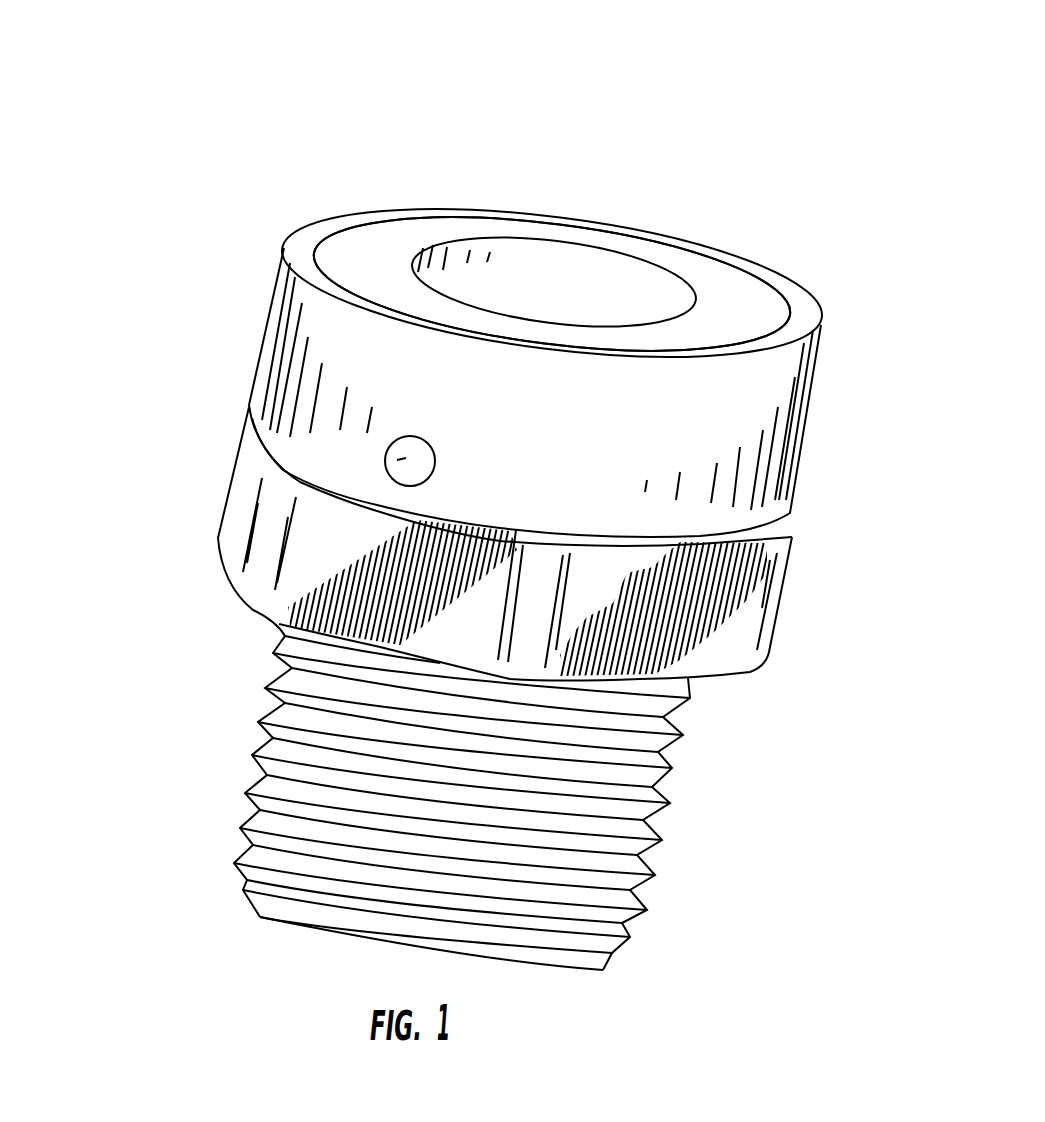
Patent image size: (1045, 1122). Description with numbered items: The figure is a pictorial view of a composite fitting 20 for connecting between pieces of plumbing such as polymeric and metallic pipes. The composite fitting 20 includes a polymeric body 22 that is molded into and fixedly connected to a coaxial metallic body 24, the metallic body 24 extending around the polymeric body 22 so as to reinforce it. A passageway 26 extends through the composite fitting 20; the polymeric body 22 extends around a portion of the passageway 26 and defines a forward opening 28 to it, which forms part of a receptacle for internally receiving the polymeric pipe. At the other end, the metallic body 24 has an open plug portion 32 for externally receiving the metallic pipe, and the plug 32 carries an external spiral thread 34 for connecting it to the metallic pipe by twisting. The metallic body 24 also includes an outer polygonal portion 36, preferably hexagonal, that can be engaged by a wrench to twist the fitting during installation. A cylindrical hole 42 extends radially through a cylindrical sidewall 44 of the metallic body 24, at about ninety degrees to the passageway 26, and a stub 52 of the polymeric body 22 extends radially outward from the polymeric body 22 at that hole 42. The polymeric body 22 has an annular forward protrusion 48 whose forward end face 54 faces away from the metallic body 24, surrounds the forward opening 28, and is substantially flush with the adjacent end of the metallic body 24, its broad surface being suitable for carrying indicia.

The composite fitting 20 is at (94, 150).
The polymeric body 22 is at (738, 317).
The metallic body 24 is at (795, 447).
The passageway 26 is at (551, 288).
The forward opening 28 is at (610, 262).
The open plug portion 32 is at (236, 837).
The external spiral thread 34 is at (667, 767).
The outer polygonal portion 36 is at (778, 615).
The cylindrical hole 42 is at (400, 452).
The cylindrical sidewall 44 is at (263, 371).
The forward protrusion 48 is at (348, 250).
The stub 52 is at (397, 460).
The forward end face 54 is at (392, 228).